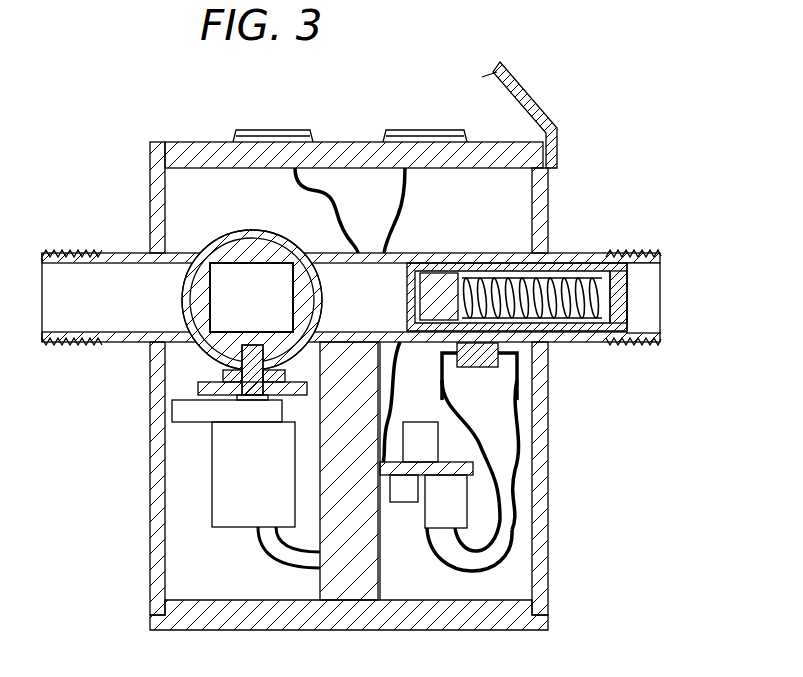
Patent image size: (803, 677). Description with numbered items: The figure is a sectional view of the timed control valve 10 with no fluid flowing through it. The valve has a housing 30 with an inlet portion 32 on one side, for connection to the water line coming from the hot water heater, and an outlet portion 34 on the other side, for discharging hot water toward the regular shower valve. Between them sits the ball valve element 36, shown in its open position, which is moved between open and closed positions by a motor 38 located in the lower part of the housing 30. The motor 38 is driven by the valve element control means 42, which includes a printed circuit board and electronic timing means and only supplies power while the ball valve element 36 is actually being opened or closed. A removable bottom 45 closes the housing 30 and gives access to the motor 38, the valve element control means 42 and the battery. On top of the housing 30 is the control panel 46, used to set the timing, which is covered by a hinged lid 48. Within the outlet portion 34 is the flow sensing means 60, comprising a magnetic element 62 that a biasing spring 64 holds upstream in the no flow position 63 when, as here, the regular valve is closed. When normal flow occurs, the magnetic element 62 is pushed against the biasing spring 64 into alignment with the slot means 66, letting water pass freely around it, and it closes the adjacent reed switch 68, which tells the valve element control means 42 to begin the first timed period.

The timed control valve 10 is at (192, 128).
The housing 30 is at (550, 578).
The inlet portion 32 is at (132, 344).
The outlet portion 34 is at (646, 343).
The ball valve element 36 is at (219, 234).
The motor 38 is at (226, 520).
The valve element control means 42 is at (478, 492).
The removable bottom 45 is at (395, 631).
The control panel 46 is at (356, 132).
The hinged lid 48 is at (538, 107).
The flow sensing means 60 is at (567, 388).
The magnetic element 62 is at (440, 290).
The no flow position 63 is at (418, 247).
The biasing spring 64 is at (598, 342).
The slot means 66 is at (570, 285).
The reed switch 68 is at (483, 368).